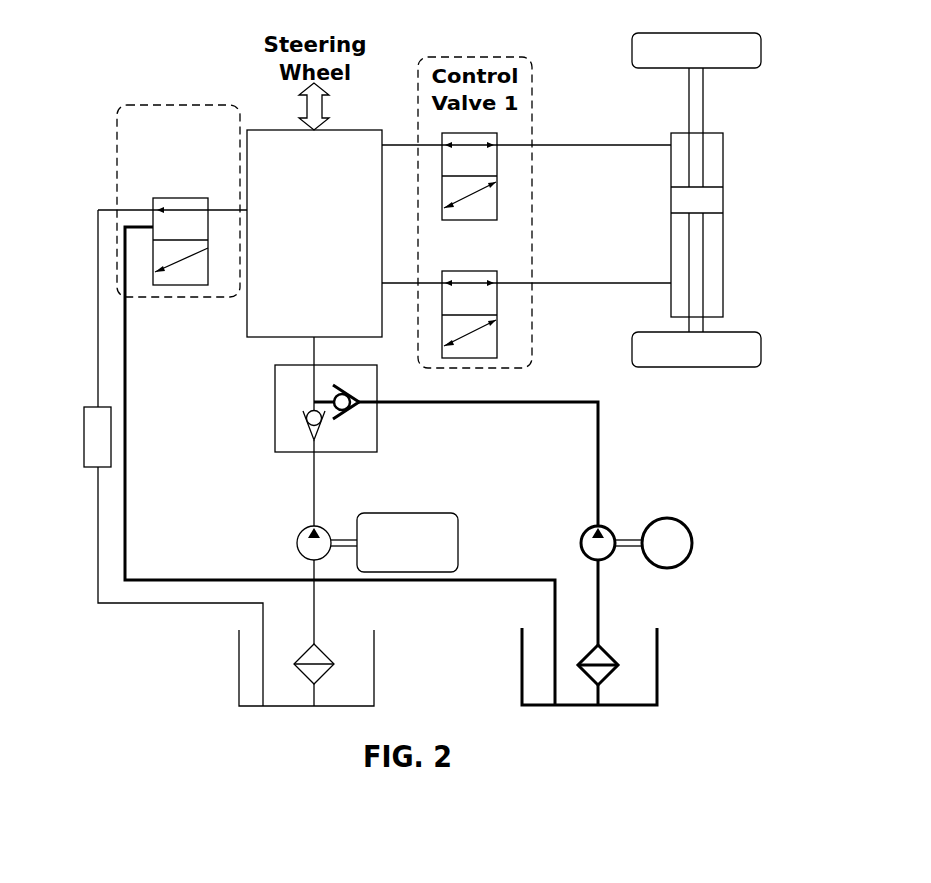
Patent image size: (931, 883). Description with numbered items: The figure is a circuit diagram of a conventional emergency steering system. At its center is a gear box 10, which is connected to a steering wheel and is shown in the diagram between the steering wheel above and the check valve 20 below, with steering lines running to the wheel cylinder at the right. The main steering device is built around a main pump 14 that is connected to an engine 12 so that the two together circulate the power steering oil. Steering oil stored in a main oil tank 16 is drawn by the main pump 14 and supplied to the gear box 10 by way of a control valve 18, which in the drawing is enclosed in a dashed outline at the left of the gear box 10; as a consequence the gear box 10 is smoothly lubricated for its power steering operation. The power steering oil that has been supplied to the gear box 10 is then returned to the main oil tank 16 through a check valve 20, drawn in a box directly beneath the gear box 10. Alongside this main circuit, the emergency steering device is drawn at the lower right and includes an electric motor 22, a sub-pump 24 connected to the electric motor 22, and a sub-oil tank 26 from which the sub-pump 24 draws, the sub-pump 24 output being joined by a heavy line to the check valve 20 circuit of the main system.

The gear box 10 is at (260, 128).
The engine 12 is at (418, 513).
The main pump 14 is at (297, 537).
The main oil tank 16 is at (374, 662).
The control valve 18 is at (117, 148).
The check valve 20 is at (298, 410).
The electric motor 22 is at (688, 520).
The sub-pump 24 is at (582, 537).
The sub-oil tank 26 is at (657, 657).